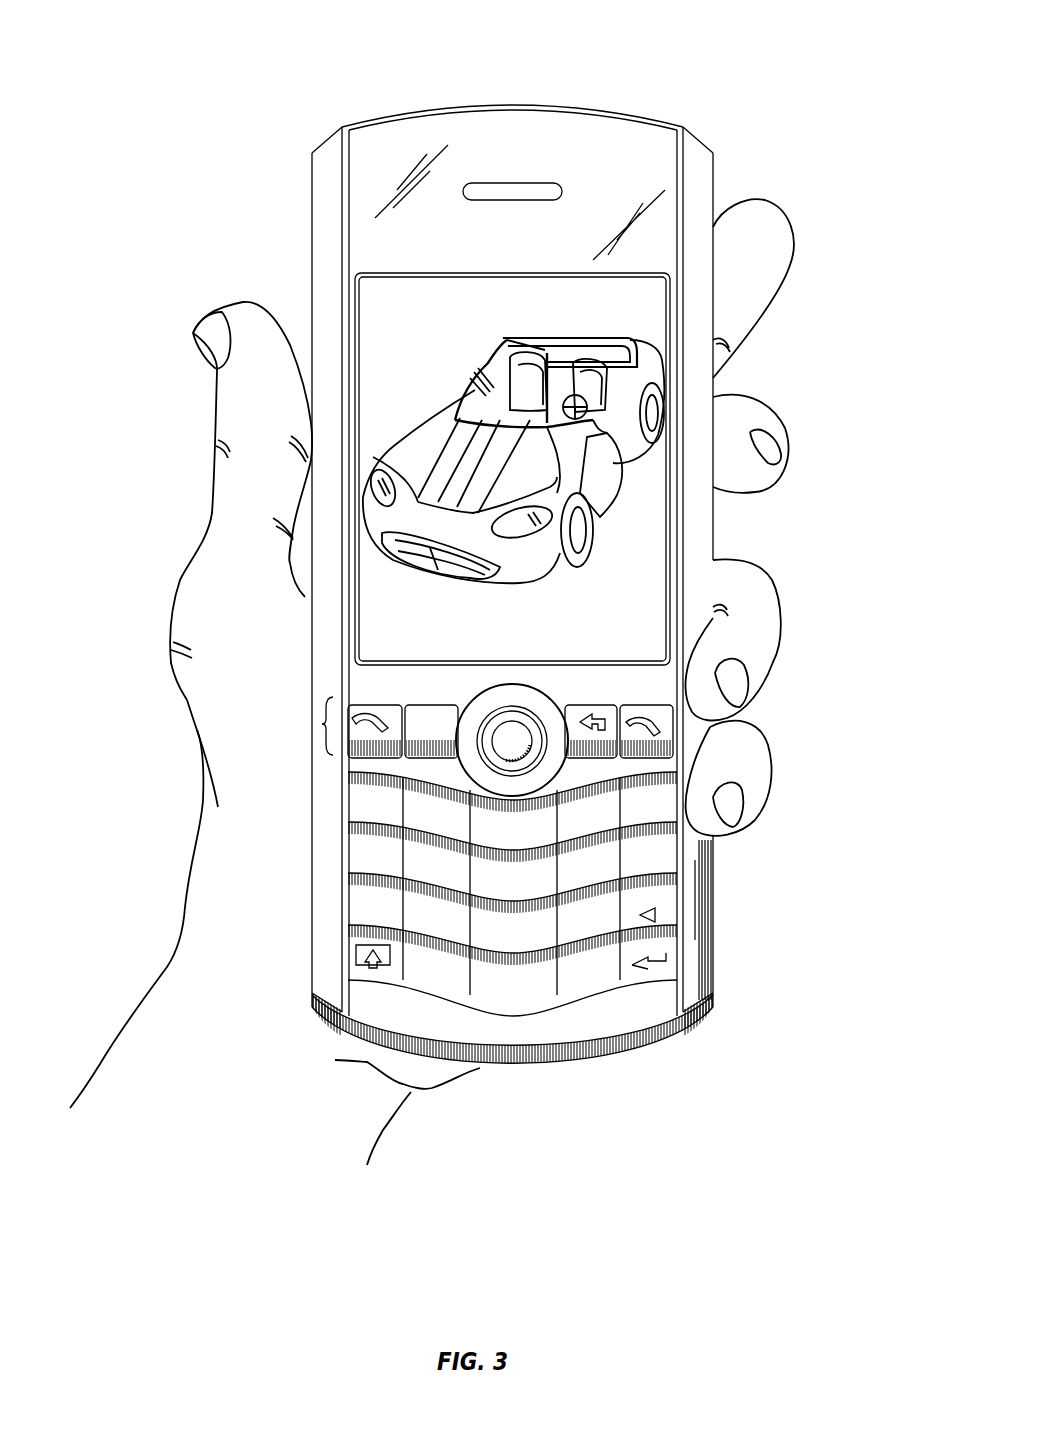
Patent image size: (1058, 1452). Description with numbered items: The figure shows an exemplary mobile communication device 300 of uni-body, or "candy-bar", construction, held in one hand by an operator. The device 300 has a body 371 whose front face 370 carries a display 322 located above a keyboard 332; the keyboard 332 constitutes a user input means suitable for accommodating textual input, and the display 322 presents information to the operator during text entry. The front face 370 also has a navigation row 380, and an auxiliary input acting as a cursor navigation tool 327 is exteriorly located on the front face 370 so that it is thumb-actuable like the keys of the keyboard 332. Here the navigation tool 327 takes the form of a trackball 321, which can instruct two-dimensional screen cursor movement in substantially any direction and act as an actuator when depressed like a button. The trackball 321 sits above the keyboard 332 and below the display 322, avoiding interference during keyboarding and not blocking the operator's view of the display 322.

The mobile communication device 300 is at (665, 37).
The front face 370 is at (701, 187).
The body 371 is at (300, 152).
The display 322 is at (382, 315).
The navigation row 380 is at (322, 724).
The trackball 321 is at (506, 745).
The cursor navigation tool 327 is at (553, 767).
The keyboard 332 is at (527, 1032).